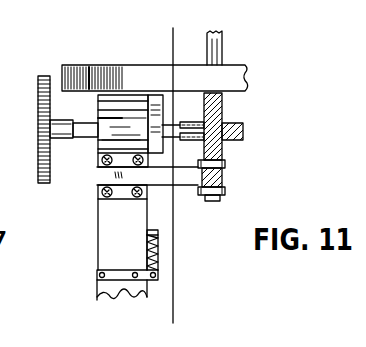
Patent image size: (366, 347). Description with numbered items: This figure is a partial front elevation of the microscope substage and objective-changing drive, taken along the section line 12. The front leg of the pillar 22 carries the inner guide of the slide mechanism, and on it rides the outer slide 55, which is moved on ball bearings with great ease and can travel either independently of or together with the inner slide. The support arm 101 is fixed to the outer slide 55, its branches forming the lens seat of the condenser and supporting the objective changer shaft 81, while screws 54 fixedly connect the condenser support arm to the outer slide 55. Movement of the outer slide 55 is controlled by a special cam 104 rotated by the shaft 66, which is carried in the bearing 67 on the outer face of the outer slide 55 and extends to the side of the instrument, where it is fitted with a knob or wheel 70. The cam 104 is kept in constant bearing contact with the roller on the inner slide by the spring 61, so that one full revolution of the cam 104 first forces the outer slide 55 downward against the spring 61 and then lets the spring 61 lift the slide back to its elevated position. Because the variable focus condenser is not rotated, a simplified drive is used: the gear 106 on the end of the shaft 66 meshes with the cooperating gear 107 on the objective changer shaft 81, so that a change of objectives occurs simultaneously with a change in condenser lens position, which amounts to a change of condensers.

The section line 12- 12 is at (173, 28).
The pillar 22 is at (102, 288).
The screws 54 is at (97, 193).
The outer slide 55 is at (110, 230).
The spring 61 is at (158, 256).
The shaft 66 is at (89, 130).
The bearing 67 is at (108, 126).
The knob or wheel 70 is at (38, 184).
The objective changer shaft 81 is at (215, 50).
The arm 101 is at (185, 183).
The cam 104 is at (162, 118).
The gear 106 is at (218, 116).
The gear 107 is at (245, 127).